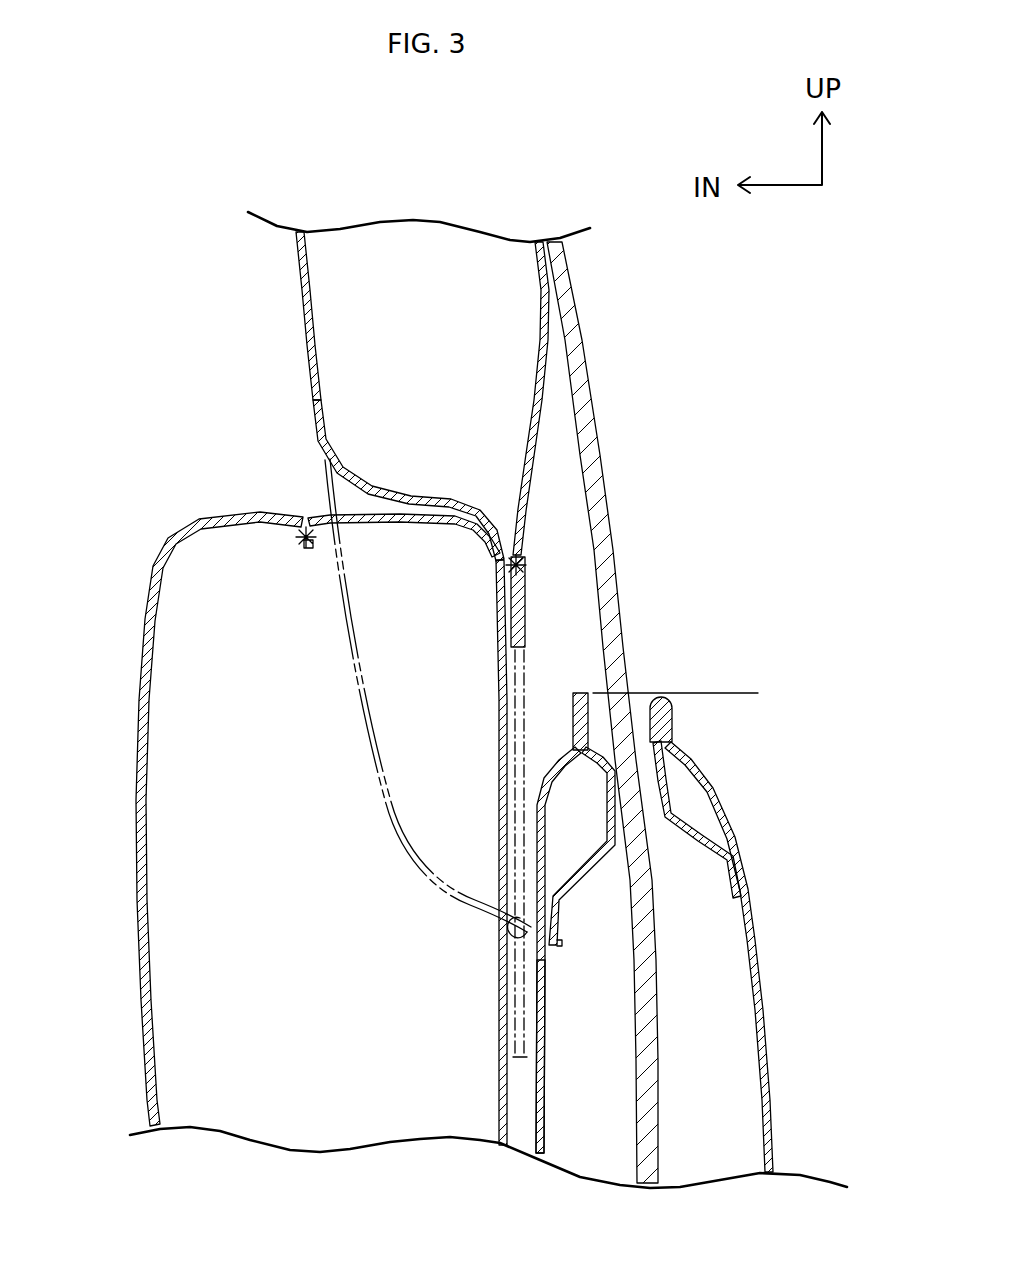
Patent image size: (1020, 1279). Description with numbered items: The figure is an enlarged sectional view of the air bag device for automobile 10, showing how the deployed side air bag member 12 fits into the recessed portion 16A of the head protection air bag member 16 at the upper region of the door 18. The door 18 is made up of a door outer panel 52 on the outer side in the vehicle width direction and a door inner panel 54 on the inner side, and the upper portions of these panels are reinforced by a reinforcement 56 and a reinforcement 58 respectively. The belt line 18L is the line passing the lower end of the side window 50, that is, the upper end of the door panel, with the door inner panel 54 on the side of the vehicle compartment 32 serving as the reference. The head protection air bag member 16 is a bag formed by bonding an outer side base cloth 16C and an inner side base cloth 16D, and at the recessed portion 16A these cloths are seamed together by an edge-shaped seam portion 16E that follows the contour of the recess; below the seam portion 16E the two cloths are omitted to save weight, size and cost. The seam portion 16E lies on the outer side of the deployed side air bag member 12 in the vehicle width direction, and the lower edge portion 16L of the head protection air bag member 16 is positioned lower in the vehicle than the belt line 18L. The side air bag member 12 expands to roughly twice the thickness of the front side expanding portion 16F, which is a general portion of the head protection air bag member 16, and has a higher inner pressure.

The air bag device for automobile 10 is at (200, 212).
The side air bag member 12 is at (145, 742).
The head protection air bag member 16 is at (429, 688).
The recessed portion 16A is at (424, 503).
The outer side base cloth 16C is at (541, 418).
The inner side base cloth 16D is at (310, 383).
The seam portion 16E is at (527, 607).
The front side expanding portion 16F is at (304, 311).
The lower edge portion 16L is at (516, 1058).
The door 18 is at (707, 894).
The belt line 18L is at (708, 692).
The vehicle compartment 32 is at (150, 468).
The side window 50 is at (584, 329).
The door outer panel 52 is at (759, 942).
The door inner panel 54 is at (546, 1098).
The reinforcement 56 is at (703, 848).
The reinforcement 58 is at (586, 886).